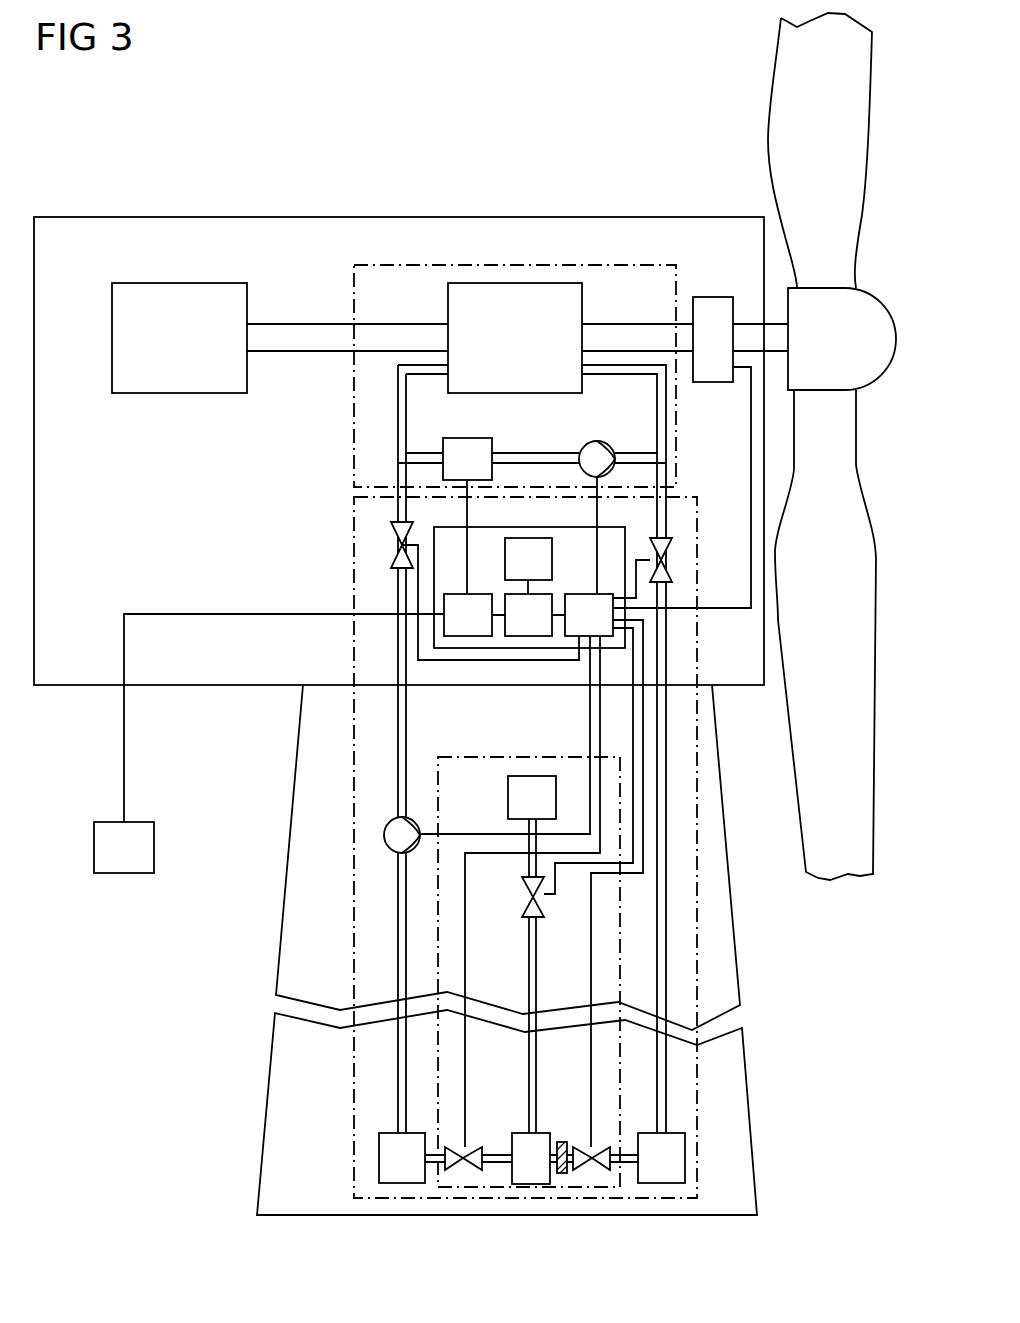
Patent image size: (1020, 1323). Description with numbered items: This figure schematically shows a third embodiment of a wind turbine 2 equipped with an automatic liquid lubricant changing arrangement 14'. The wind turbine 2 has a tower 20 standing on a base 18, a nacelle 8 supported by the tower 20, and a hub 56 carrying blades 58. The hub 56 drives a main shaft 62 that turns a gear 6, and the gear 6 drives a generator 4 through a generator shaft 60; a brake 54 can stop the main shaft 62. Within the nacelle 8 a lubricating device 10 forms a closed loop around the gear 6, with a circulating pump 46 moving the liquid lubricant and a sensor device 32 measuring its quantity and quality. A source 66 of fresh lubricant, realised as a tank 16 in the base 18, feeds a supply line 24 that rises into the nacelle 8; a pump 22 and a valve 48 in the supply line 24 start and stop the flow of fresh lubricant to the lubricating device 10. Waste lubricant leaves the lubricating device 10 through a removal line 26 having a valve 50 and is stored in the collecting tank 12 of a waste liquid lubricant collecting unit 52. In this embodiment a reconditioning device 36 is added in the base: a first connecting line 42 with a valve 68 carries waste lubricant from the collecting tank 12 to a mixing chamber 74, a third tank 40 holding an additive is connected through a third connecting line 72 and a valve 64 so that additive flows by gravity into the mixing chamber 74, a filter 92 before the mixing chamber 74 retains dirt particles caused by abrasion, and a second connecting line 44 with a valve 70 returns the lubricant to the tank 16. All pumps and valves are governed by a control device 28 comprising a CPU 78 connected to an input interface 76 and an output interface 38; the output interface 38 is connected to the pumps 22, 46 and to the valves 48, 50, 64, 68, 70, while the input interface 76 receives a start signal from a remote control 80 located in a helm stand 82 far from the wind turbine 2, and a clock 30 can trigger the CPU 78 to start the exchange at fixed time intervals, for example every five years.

The wind turbine 2 is at (550, 160).
The generator 4 is at (180, 283).
The gear 6 is at (515, 283).
The nacelle 8 is at (410, 216).
The lubricating device 10 is at (602, 265).
The collecting tank 12 is at (649, 1173).
The automatic liquid lubricant changing arrangement 14' is at (320, 928).
The tank 16 is at (390, 1173).
The base 18 is at (757, 1132).
The tower 20 is at (724, 815).
The pump 22 is at (400, 817).
The supply line 24 is at (408, 722).
The removal line 26 is at (668, 657).
The control device 28 is at (516, 650).
The clock 30 is at (516, 574).
The sensor device 32 is at (480, 474).
The reconditioning device 36 is at (573, 757).
The output interface 38 is at (577, 630).
The third tank 40 is at (508, 797).
The first connecting line 42 is at (622, 1156).
The second connecting line 44 is at (498, 1150).
The circulating pump 46 is at (601, 442).
The valve 48 is at (395, 545).
The valve 50 is at (672, 560).
The waste liquid lubricant collecting unit 52 is at (692, 1158).
The brake 54 is at (712, 297).
The hub 56 is at (812, 292).
The blades 58 is at (795, 73).
The generator shaft 60 is at (405, 337).
The main shaft 62 is at (640, 338).
The valve 64 is at (522, 900).
The source 66 is at (365, 1158).
The valve 68 is at (597, 1145).
The valve 70 is at (447, 1145).
The third connecting line 72 is at (527, 870).
The mixing chamber 74 is at (518, 1131).
The input interface 76 is at (456, 630).
The CPU 78 is at (516, 630).
The remote control 80 is at (112, 862).
The helm stand 82 is at (124, 873).
The filter 92 is at (562, 1141).